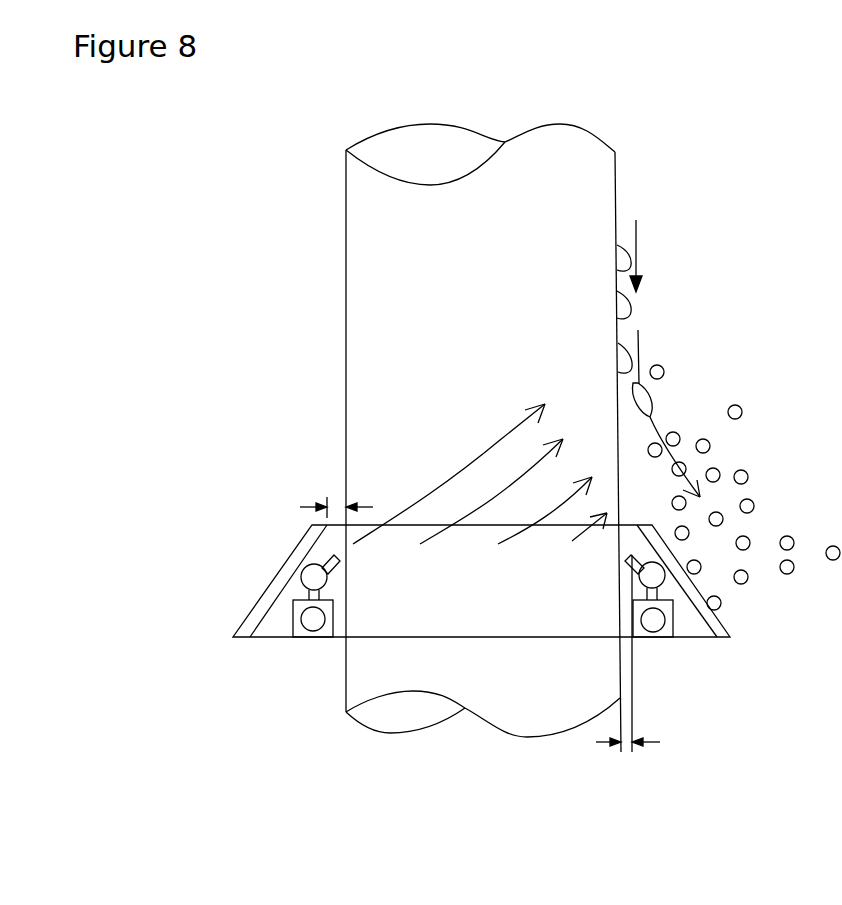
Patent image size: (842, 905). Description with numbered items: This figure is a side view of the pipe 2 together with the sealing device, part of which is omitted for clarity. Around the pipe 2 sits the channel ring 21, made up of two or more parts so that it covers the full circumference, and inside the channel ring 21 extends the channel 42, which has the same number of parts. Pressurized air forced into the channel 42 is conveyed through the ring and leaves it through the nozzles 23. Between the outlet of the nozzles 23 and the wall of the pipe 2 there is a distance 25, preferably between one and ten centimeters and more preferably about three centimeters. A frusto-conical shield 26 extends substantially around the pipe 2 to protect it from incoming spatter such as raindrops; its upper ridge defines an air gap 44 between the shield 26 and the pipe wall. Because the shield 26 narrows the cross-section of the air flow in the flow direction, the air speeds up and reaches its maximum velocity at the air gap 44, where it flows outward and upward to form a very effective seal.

The pipe 2 is at (368, 266).
The channel ring 21 is at (297, 632).
The nozzles 23 is at (301, 556).
The distance 25 is at (623, 752).
The shield 26 is at (263, 597).
The channel 42 is at (314, 622).
The air gap 44 is at (338, 506).